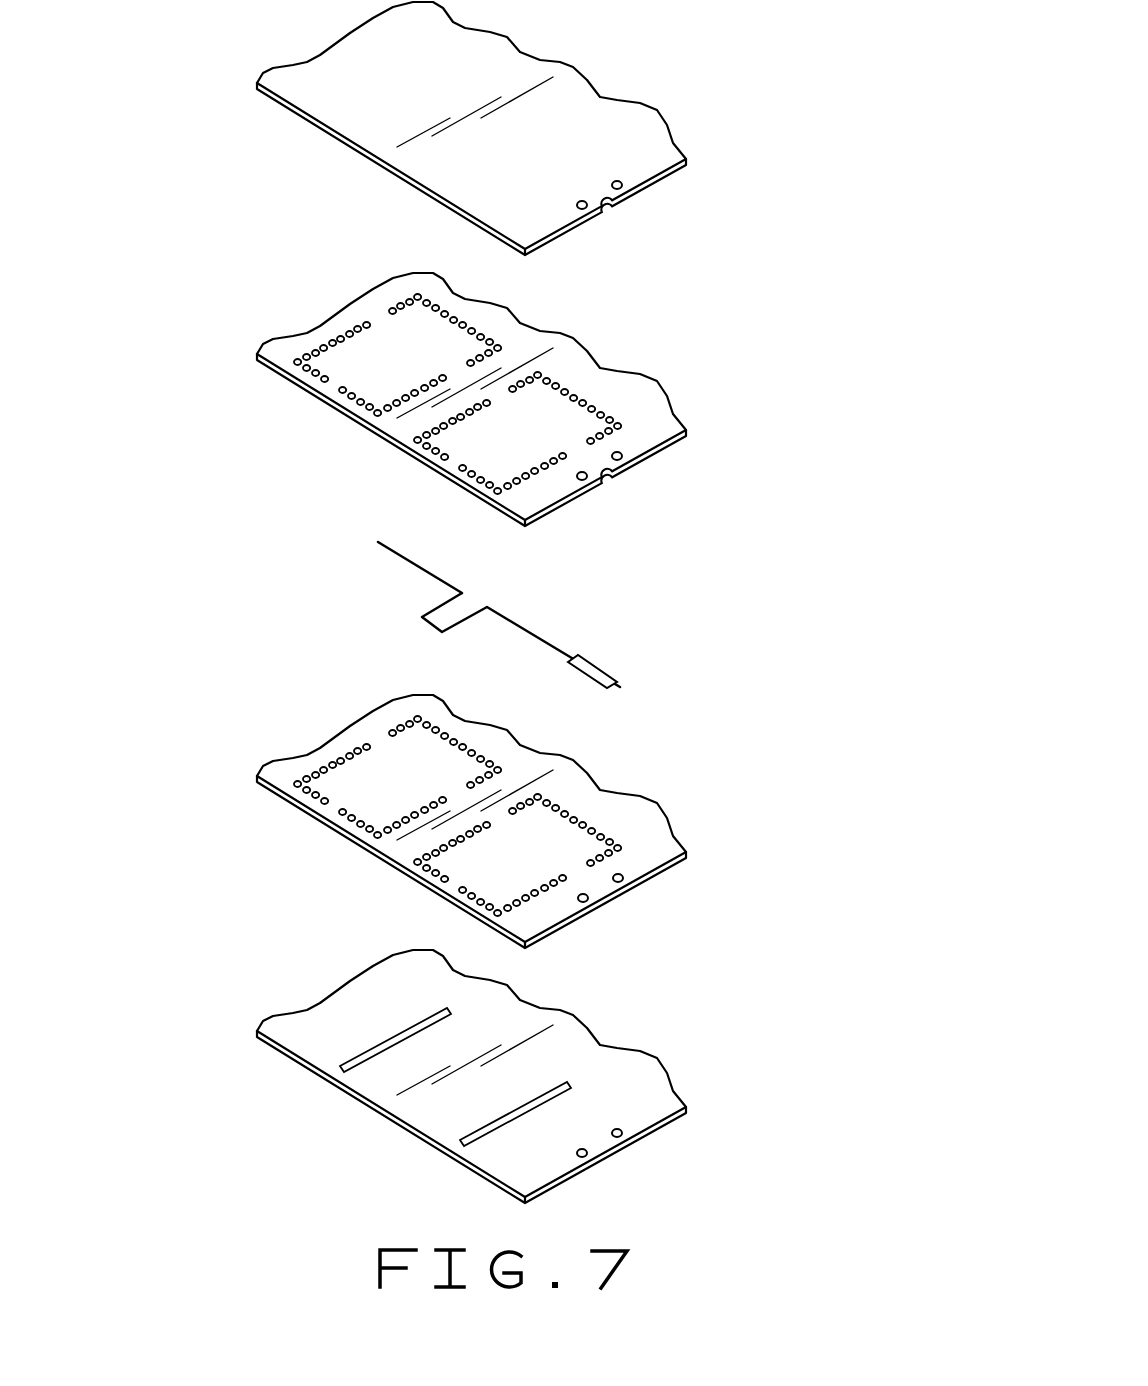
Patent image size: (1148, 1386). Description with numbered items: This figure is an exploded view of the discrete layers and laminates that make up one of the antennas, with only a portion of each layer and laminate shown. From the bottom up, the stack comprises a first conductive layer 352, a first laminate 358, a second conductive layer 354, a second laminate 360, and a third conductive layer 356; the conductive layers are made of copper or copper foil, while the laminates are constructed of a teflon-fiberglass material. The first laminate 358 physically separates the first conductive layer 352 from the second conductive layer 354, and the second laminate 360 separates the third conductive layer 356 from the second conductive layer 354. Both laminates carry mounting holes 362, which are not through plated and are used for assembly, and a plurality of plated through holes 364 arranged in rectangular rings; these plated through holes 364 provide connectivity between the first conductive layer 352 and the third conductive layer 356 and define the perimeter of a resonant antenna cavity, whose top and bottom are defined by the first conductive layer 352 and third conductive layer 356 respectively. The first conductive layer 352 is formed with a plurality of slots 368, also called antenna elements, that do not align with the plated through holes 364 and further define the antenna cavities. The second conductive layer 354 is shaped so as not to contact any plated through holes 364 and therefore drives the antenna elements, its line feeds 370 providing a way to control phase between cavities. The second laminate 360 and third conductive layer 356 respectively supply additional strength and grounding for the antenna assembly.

The first conductive layer 352 is at (623, 1160).
The second conductive layer 354 is at (632, 692).
The third conductive layer 356 is at (661, 189).
The first laminate 358 is at (667, 878).
The second laminate 360 is at (663, 452).
The mounting holes 362 is at (583, 470).
The plated through holes 364 is at (369, 320).
The slots 368 is at (388, 1036).
The line feeds 370 is at (439, 611).